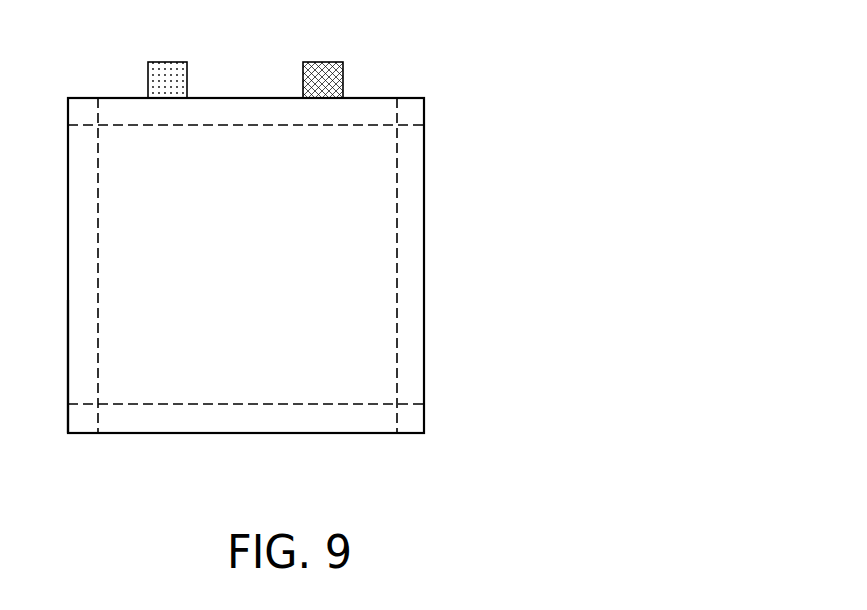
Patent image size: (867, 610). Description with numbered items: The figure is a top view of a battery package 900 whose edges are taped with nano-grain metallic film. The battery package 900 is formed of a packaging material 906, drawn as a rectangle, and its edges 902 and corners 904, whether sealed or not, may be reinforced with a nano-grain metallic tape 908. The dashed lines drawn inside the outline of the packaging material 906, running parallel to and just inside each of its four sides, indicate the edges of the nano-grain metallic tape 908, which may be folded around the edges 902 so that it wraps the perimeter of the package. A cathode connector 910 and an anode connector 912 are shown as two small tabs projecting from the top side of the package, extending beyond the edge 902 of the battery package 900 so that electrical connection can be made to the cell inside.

The battery package 900 is at (513, 48).
The edges 902 is at (123, 98).
The corners 904 is at (68, 433).
The packaging material 906 is at (188, 253).
The nano-grain metallic tape 908 is at (418, 208).
The cathode connector 910 is at (187, 83).
The anode connector 912 is at (343, 83).